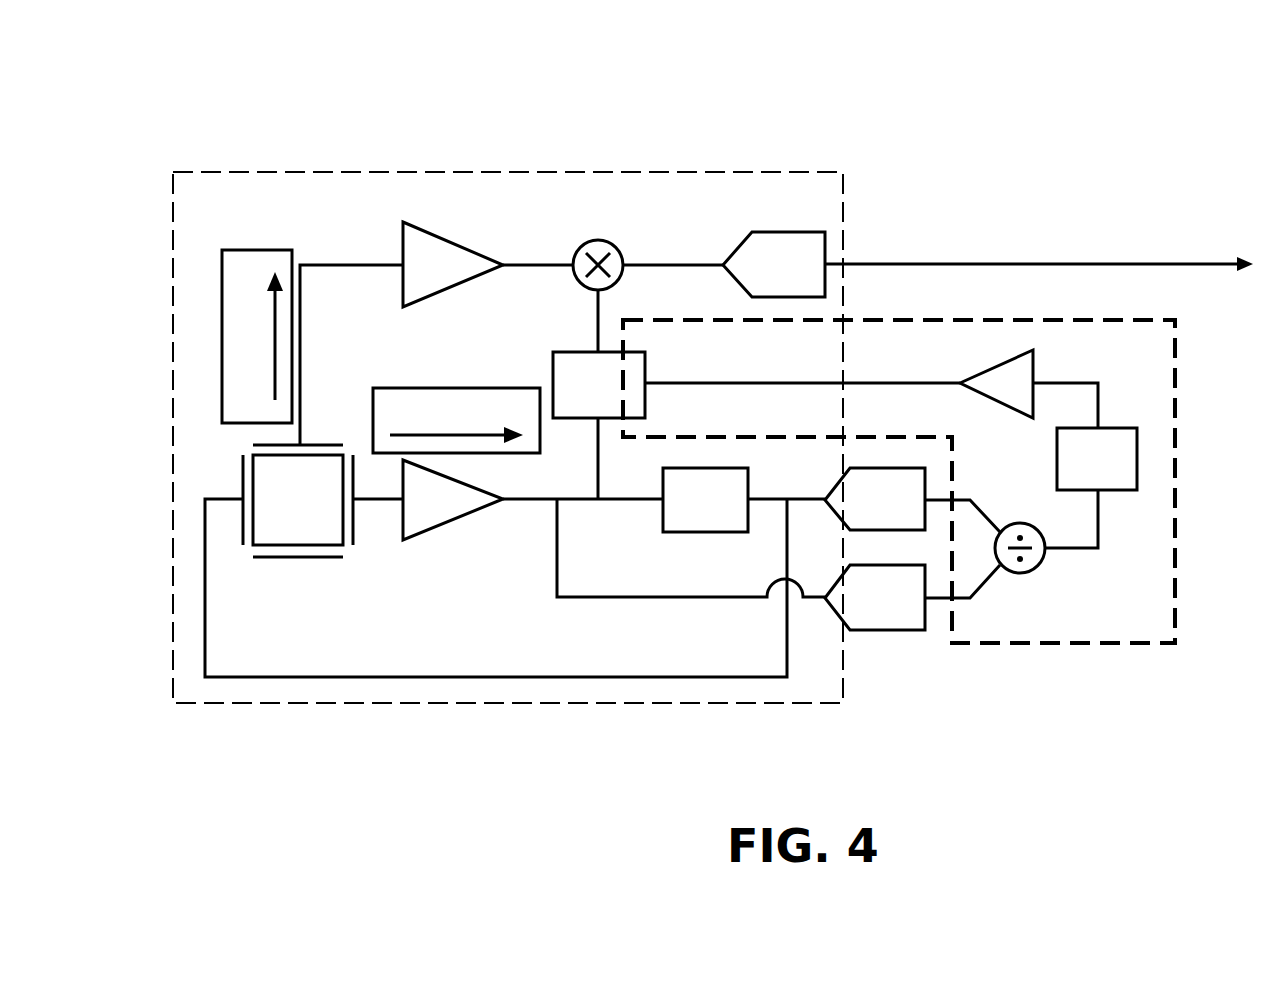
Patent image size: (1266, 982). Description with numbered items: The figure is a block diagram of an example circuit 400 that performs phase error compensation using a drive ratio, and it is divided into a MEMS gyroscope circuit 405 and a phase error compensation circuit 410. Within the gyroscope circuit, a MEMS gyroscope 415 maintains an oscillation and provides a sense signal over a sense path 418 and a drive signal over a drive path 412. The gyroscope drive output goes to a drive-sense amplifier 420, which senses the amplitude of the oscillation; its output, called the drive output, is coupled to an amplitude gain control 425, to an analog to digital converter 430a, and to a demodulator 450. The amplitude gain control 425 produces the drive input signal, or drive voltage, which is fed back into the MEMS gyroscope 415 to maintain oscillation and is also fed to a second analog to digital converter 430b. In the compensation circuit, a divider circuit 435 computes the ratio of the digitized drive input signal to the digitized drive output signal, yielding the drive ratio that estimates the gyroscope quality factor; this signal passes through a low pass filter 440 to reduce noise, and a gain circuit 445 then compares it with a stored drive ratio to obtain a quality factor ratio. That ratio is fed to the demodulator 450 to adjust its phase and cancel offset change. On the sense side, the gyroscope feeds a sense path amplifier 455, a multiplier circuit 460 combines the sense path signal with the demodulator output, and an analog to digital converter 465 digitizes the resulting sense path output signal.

The circuit 400 is at (141, 44).
The MEMS gyroscope circuit 405 is at (243, 705).
The phase error compensation circuit 410 is at (1063, 650).
The drive path 412 is at (456, 410).
The MEMS gyroscope 415 is at (312, 557).
The sense path 418 is at (245, 336).
The drive-sense amplifier 420 is at (452, 515).
The amplitude gain control 425 is at (703, 520).
The analog to digital converter 430a is at (912, 632).
The analog to digital converter 430b is at (900, 470).
The divider circuit 435 is at (1037, 572).
The low pass filter 440 is at (1137, 455).
The gain circuit 445 is at (1030, 353).
The demodulator 450 is at (553, 352).
The sense path amplifier 455 is at (463, 240).
The multiplier circuit 460 is at (612, 235).
The analog to digital converter 465 is at (790, 225).